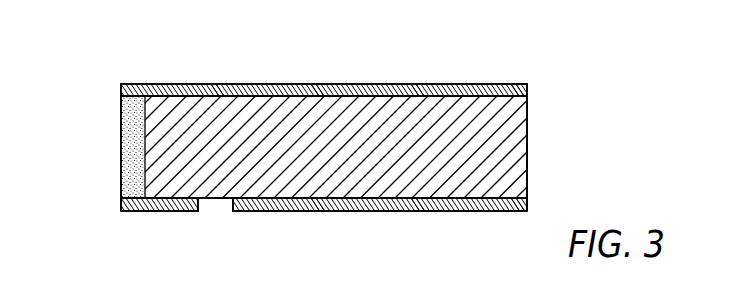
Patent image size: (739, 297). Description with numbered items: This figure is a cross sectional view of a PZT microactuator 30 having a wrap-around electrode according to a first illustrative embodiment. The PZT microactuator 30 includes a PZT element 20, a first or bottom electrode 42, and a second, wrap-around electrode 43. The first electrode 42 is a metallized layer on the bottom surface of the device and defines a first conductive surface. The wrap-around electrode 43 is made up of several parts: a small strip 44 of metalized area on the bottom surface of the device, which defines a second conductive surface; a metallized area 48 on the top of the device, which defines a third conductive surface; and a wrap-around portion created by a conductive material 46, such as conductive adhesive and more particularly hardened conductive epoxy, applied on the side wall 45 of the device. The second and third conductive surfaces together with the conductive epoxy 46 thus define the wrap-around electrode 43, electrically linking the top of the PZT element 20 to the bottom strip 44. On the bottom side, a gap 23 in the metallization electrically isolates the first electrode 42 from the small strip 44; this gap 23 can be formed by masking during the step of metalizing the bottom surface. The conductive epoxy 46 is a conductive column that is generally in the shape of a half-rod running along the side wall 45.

The PZT microactuator 30 is at (337, 144).
The PZT element 20 is at (500, 153).
The metallized area 48 is at (445, 85).
The first electrode 42 is at (437, 211).
The wrap-around electrode 43 is at (143, 74).
The small strip 44 is at (170, 211).
The gap 23 is at (213, 199).
The conductive material 46 is at (131, 133).
The side wall 45 is at (121, 170).